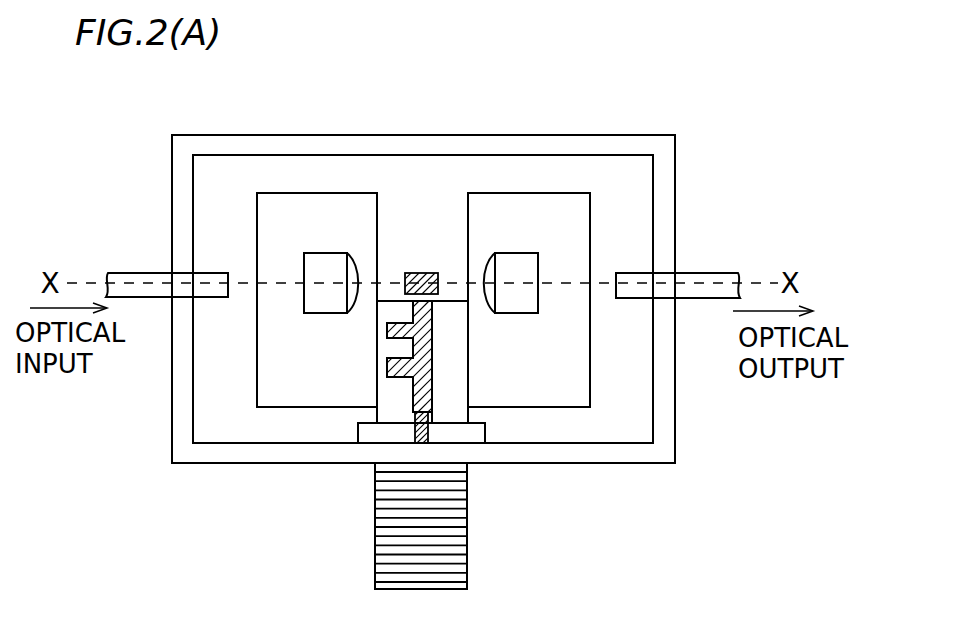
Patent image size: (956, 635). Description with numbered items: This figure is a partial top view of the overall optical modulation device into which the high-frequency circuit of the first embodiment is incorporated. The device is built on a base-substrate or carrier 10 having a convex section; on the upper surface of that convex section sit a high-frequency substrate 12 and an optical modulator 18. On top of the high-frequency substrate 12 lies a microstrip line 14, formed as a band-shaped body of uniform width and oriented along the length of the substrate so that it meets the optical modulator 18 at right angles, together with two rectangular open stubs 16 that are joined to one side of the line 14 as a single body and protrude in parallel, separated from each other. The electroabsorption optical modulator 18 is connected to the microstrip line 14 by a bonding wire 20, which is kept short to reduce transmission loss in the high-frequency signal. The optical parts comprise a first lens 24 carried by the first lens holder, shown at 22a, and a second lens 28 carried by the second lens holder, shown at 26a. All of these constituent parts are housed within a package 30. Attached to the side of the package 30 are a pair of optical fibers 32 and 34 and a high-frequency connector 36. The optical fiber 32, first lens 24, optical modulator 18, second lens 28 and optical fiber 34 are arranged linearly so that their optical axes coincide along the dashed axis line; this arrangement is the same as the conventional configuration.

The base-substrate (carrier) 10 is at (578, 352).
The high-frequency substrate 12 is at (450, 396).
The microstrip line 14 is at (413, 393).
The open stubs 16 is at (387, 337).
The optical modulator 18 is at (437, 272).
The bonding wire 20 is at (413, 312).
The first lens 22a is at (312, 264).
The first lens 24 is at (353, 266).
The second lens 26a is at (533, 262).
The second lens 28 is at (492, 264).
The package 30 is at (610, 146).
The optical fiber 32 is at (125, 276).
The optical fiber 34 is at (713, 274).
The high-frequency connector 36 is at (464, 563).